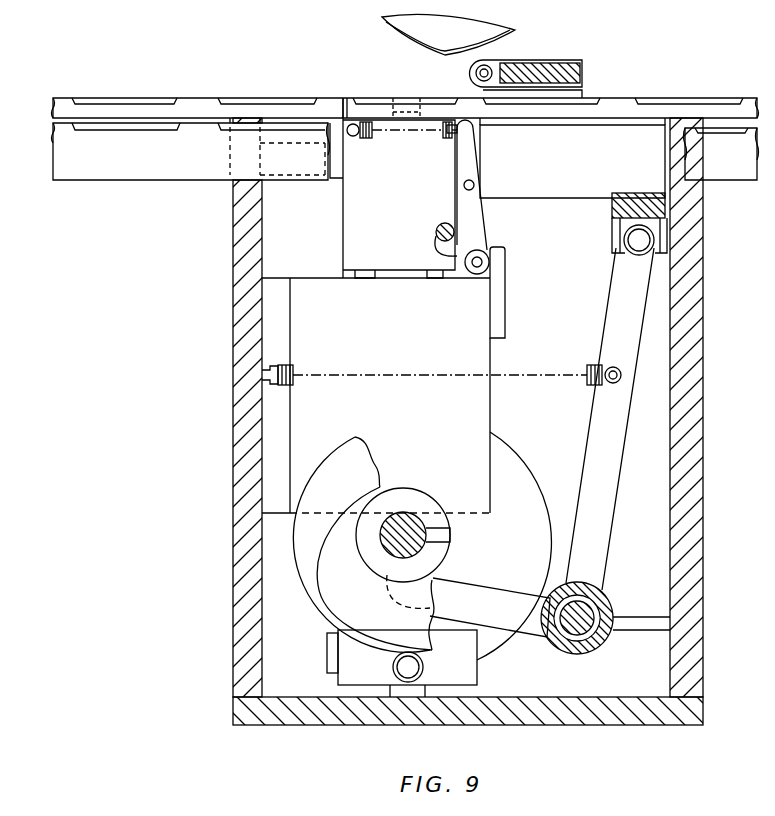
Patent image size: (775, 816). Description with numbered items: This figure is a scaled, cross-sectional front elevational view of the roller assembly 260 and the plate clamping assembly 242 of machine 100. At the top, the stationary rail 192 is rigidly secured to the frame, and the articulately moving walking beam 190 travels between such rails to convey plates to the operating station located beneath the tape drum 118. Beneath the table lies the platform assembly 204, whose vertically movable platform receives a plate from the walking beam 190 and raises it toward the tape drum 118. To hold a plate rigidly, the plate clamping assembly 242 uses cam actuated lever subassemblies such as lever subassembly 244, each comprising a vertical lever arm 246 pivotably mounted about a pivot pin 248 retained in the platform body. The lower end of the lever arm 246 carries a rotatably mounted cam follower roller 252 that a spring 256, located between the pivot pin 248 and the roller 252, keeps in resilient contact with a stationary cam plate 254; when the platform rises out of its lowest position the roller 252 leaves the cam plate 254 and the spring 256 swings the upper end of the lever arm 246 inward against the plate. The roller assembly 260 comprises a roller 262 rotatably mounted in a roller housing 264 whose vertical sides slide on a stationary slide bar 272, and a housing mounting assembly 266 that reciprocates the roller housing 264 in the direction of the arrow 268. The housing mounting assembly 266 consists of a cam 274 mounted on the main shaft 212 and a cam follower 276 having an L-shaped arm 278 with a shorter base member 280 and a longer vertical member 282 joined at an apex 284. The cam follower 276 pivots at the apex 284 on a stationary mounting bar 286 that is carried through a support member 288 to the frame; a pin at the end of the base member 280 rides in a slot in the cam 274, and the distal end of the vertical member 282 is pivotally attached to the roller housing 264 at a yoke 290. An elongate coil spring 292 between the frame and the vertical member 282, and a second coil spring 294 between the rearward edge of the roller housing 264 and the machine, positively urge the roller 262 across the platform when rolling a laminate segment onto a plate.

The machine 100 is at (755, 548).
The tape drum 118 is at (383, 36).
The walking beam 190 is at (75, 180).
The stationary rail 192 is at (53, 98).
The platform assembly 204 is at (341, 247).
The main shaft 212 is at (430, 528).
The plate clamping assembly 242 is at (460, 277).
The lever subassembly 244 is at (495, 238).
The lever arm 246 is at (460, 160).
The pivot pin 248 is at (474, 184).
The cam follower roller 252 is at (477, 274).
The cam plate 254 is at (505, 312).
The spring 256 is at (437, 229).
The roller assembly 260 is at (625, 83).
The roller 262 is at (490, 68).
The roller housing 264 is at (582, 65).
The housing mounting assembly 266 is at (597, 236).
The arrow 268 is at (426, 73).
The slide bar 272 is at (343, 178).
The cam 274 is at (512, 444).
The cam follower 276 is at (578, 666).
The L-shaped arm 278 is at (613, 519).
The base member 280 is at (517, 600).
The vertical member 282 is at (635, 313).
The apex 284 is at (605, 610).
The mounting bar 286 is at (583, 630).
The support member 288 is at (665, 632).
The yoke 290 is at (665, 252).
The coil spring 292 is at (295, 370).
The second coil spring 294 is at (370, 140).